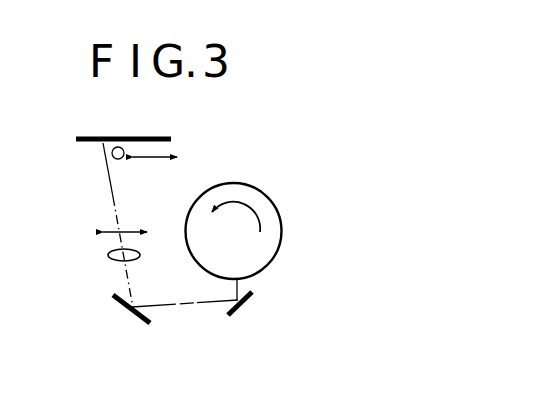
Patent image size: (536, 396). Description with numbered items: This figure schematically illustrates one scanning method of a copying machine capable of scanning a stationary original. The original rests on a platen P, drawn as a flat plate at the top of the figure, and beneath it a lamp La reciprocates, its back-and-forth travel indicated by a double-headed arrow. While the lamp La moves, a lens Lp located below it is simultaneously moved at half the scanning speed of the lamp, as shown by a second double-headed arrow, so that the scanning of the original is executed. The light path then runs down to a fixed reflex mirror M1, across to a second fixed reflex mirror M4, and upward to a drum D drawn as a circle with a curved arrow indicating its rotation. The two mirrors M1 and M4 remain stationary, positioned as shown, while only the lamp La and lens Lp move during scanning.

The platen P is at (155, 137).
The lamp La is at (120, 159).
The lens Lp is at (131, 259).
The photosensitive drum D is at (282, 232).
The fixed reflex mirror M1 is at (135, 317).
The fixed reflex mirror M4 is at (248, 300).